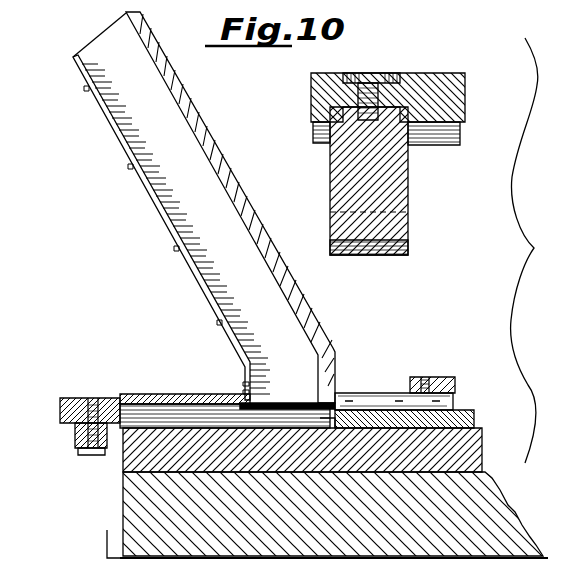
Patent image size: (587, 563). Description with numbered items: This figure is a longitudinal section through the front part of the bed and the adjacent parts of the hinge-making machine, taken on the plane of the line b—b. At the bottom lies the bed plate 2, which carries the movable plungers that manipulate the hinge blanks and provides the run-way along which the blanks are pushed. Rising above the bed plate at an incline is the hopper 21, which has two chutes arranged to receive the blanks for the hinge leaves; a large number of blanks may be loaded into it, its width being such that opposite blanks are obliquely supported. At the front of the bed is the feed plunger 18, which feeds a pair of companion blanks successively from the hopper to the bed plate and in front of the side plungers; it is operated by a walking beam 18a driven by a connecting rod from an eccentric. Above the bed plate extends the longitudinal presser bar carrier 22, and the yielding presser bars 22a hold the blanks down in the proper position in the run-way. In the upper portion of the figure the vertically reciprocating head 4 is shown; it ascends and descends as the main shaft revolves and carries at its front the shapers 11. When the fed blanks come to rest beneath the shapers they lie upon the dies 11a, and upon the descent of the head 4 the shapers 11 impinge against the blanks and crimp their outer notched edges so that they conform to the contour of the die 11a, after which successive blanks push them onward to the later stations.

The bed plate 2 is at (490, 496).
The vertically reciprocating head 4 is at (450, 97).
The shaper 11 is at (410, 243).
The die 11a is at (463, 421).
The feed plunger 18 is at (62, 410).
The walking beam 18a is at (77, 440).
The hopper 21 is at (204, 207).
The presser bar carrier 22 is at (435, 380).
The presser bar 22a is at (385, 396).
The section line b— b is at (105, 539).